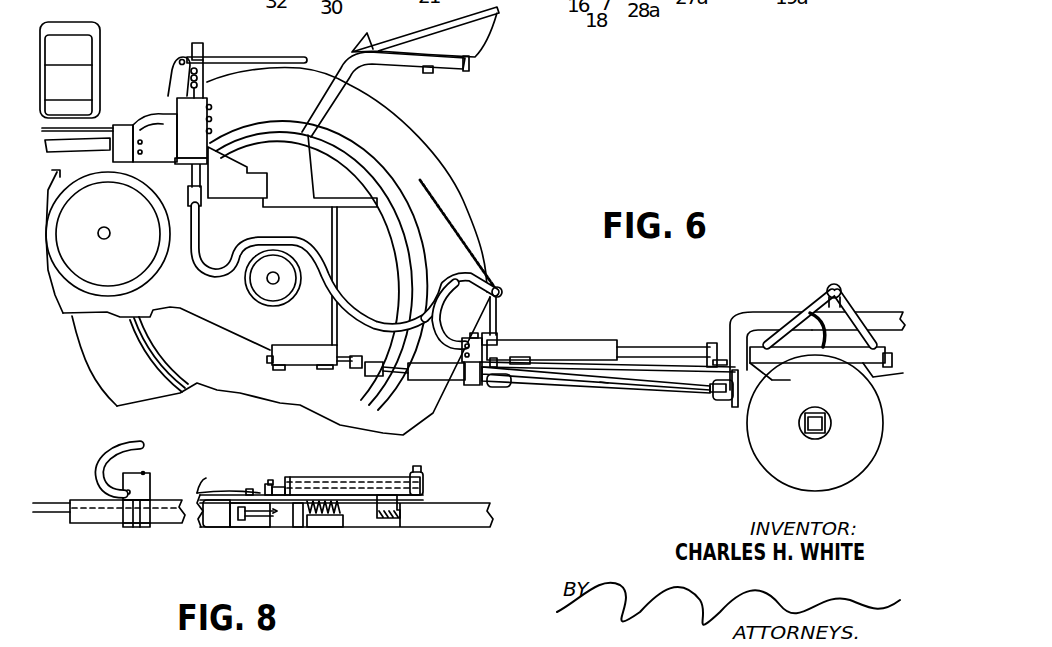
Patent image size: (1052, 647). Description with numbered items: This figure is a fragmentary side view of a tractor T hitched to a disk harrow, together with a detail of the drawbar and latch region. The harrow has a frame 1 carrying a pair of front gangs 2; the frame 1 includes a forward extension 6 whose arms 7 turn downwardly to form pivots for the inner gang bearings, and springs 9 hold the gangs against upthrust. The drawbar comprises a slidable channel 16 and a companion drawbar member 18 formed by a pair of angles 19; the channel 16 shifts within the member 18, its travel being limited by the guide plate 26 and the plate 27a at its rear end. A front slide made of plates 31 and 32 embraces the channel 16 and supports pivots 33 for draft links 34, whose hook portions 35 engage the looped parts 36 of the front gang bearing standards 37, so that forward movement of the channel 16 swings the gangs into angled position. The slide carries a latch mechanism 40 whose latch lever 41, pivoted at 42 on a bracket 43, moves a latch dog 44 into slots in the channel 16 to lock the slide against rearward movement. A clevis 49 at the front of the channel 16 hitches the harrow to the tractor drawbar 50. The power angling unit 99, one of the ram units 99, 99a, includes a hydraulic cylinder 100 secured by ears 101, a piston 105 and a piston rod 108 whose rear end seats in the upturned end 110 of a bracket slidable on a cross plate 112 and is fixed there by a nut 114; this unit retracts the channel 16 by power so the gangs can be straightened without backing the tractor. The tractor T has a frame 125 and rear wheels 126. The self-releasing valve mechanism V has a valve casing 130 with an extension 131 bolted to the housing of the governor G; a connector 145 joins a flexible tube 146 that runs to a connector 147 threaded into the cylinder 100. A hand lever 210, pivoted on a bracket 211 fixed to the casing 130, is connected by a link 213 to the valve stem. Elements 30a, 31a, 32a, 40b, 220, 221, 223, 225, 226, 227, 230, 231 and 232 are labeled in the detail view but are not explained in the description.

In FIG. 6, the frame 1 is at (874, 307).
In FIG. 6, the front gangs 2 is at (847, 371).
In FIG. 6, the forward extension 6 is at (740, 325).
In FIG. 6, the arms 7 is at (813, 340).
In FIG. 6, the springs 9 is at (828, 287).
In FIG. 6, the drawbar channel 16 is at (426, 381).
In FIG. 8, the drawbar channel 16 is at (83, 510).
In FIG. 6, the companion drawbar member 18 is at (585, 382).
In FIG. 8, the companion drawbar member 18 is at (377, 535).
In FIG. 6, the angles 19 is at (655, 377).
In FIG. 8, the upper guide plate 26 is at (340, 495).
In FIG. 8, the plate 27a is at (337, 515).
In FIG. 8, the housing 30a is at (236, 546).
In FIG. 6, the plate 31 is at (468, 380).
In FIG. 8, the plate 31a is at (229, 494).
In FIG. 6, the plate 32 is at (490, 390).
In FIG. 8, the pin 32a is at (258, 528).
In FIG. 6, the pivots 33 is at (508, 380).
In FIG. 6, the draft links 34 is at (633, 385).
In FIG. 8, the draft links 34 is at (273, 518).
In FIG. 6, the hook portions 35 is at (712, 388).
In FIG. 6, the forward looped parts 36 is at (722, 400).
In FIG. 6, the front gang bearing standards 37 is at (736, 407).
In FIG. 6, the latch mechanism 40 is at (464, 294).
In FIG. 8, the hose 40b is at (88, 465).
In FIG. 8, the latch lever 41 is at (138, 444).
In FIG. 8, the pivot 42 is at (132, 494).
In FIG. 6, the bracket 43 is at (462, 344).
In FIG. 8, the bracket 43 is at (138, 478).
In FIG. 8, the latch dog 44 is at (143, 472).
In FIG. 6, the clevis 49 is at (370, 397).
In FIG. 6, the tractor drawbar 50 is at (347, 373).
In FIG. 6, the power angling unit 99 is at (561, 334).
In FIG. 8, the hydraulic ram unit 99a is at (270, 431).
In FIG. 6, the hydraulic cylinder 100 is at (590, 341).
In FIG. 6, the ears 101 is at (522, 357).
In FIG. 8, the ears 101 is at (390, 495).
In FIG. 8, the piston 105 is at (405, 475).
In FIG. 6, the piston rod 108 is at (650, 347).
In FIG. 8, the piston rod 108 is at (282, 486).
In FIG. 6, the upturned end 110 is at (712, 345).
In FIG. 8, the cross plate 112 is at (395, 517).
In FIG. 8, the nut 114 is at (266, 484).
In FIG. 6, the tractor frame 125 is at (65, 305).
In FIG. 6, the rear wheels 126 is at (120, 390).
In FIG. 6, the valve casing 130 is at (166, 114).
In FIG. 6, the extension 131 is at (152, 128).
In FIG. 6, the connector 145 is at (203, 191).
In FIG. 6, the flexible tube 146 is at (199, 236).
In FIG. 6, the connector 147 is at (500, 318).
In FIG. 6, the hand lever 210 is at (244, 51).
In FIG. 6, the bracket 211 is at (175, 66).
In FIG. 6, the link 213 is at (200, 80).
In FIG. 8, the bracket 220 is at (403, 508).
In FIG. 8, the stop 221 is at (273, 480).
In FIG. 8, the stop 223 is at (248, 490).
In FIG. 8, the block 225 is at (123, 518).
In FIG. 8, the bolt 226 is at (131, 525).
In FIG. 8, the bolt 227 is at (146, 512).
In FIG. 8, the cap 230 is at (212, 493).
In FIG. 8, the sleeve 231 is at (213, 498).
In FIG. 8, the joint 232 is at (220, 527).
In FIG. 6, the governor G is at (127, 118).
In FIG. 6, the tractor T is at (120, 15).
In FIG. 6, the self-releasing valve mechanism V is at (216, 113).